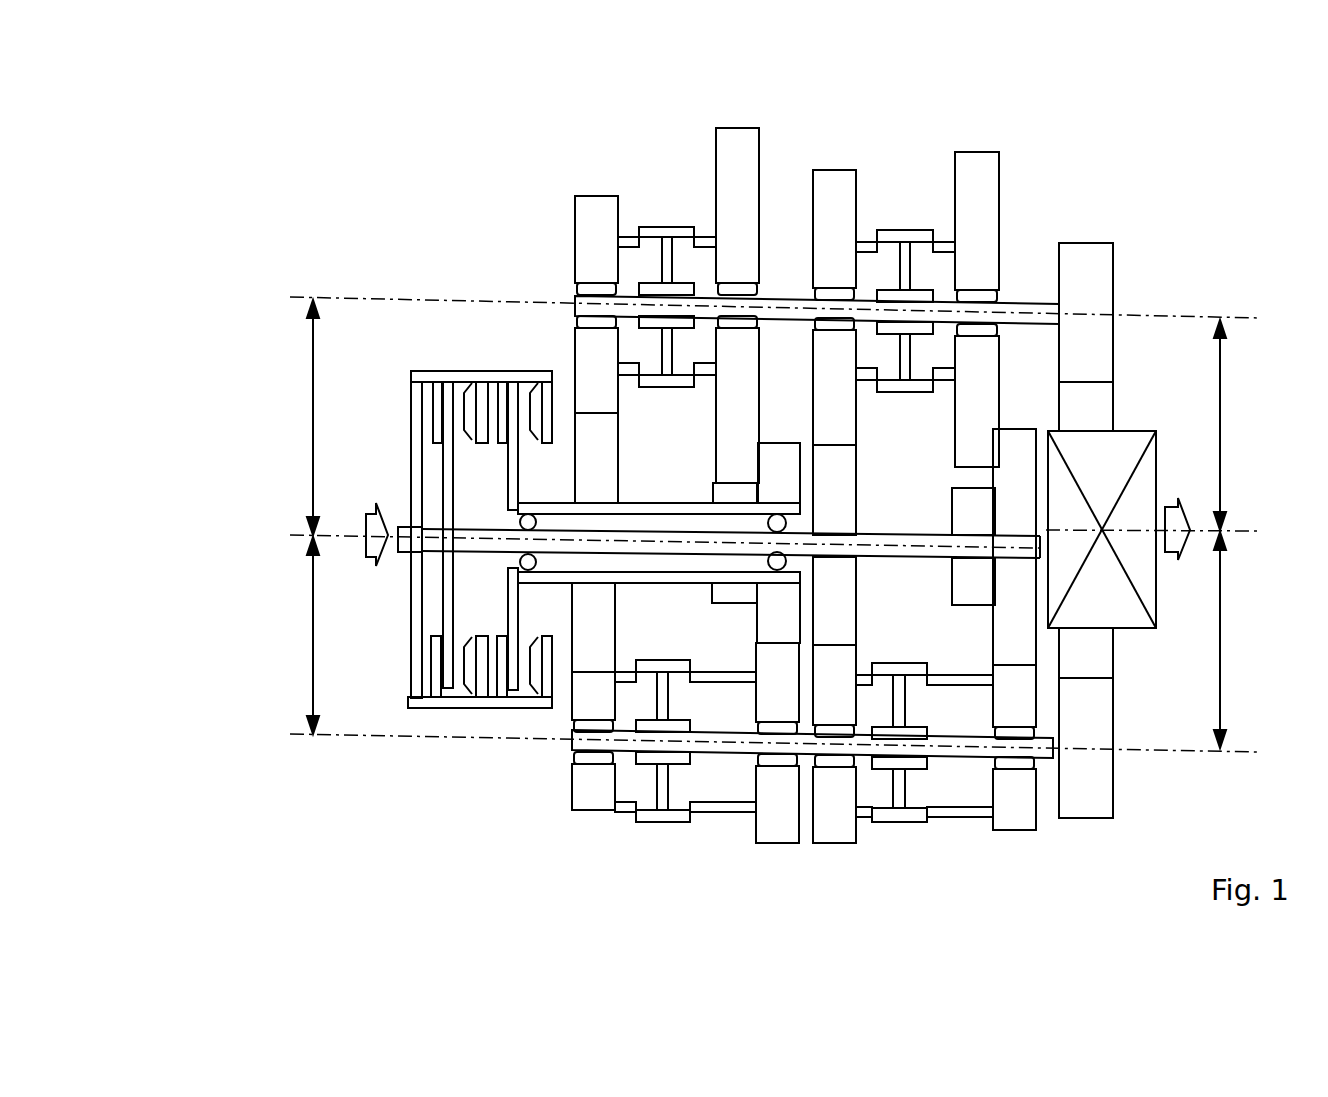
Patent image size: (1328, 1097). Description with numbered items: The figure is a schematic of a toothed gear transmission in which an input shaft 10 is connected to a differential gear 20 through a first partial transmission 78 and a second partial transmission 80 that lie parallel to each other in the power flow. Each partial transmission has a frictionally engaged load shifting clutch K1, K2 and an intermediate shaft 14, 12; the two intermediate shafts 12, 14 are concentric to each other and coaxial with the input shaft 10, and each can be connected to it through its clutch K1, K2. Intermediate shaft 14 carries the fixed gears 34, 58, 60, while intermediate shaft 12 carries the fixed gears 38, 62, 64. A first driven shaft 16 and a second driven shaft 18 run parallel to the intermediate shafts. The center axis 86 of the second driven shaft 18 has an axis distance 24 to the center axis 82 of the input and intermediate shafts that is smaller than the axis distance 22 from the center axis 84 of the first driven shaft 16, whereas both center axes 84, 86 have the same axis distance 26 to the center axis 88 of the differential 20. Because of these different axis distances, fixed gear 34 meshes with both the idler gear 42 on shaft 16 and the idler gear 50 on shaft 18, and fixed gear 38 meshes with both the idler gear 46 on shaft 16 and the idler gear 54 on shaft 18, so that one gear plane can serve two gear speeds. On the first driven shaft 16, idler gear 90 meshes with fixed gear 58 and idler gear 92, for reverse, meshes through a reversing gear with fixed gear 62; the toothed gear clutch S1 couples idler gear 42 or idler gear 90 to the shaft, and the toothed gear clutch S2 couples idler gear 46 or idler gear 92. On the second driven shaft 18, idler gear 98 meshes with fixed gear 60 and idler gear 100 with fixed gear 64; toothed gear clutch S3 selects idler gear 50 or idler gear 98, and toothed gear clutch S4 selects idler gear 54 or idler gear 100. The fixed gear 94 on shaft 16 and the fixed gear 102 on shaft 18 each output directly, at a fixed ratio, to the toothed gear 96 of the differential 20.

The input shaft 10 is at (405, 537).
The intermediate shaft 12 is at (487, 540).
The intermediate shaft 14 is at (560, 573).
The first driven shaft 16 is at (1038, 308).
The second driven shaft 18 is at (1022, 753).
The differential gear 20 is at (1141, 484).
The axis distance 22 is at (313, 445).
The axis distance 24 is at (312, 637).
The axis distance 26 is at (1251, 534).
The fixed gear 34 is at (595, 640).
The fixed gear 38 is at (843, 475).
The idler gear 42 is at (592, 228).
The idler gear 46 is at (828, 400).
The idler gear 50 is at (585, 777).
The idler gear 54 is at (853, 648).
The fixed gear 58 is at (725, 493).
The fixed gear 60 is at (773, 620).
The fixed gear 62 is at (972, 523).
The fixed gear 64 is at (1003, 640).
The first partial transmission 78 is at (1068, 130).
The second partial transmission 80 is at (440, 125).
The center axis 82 is at (308, 536).
The center axis 84 is at (483, 297).
The center axis 86 is at (390, 748).
The center axis 88 is at (1224, 548).
The idler gear 90 is at (747, 242).
The idler gear 92 is at (983, 248).
The fixed gear 94 is at (1103, 285).
The toothed gear 96 is at (1095, 400).
The idler gear 98 is at (767, 817).
The idler gear 100 is at (1032, 817).
The fixed gear 102 is at (1097, 777).
The load shifting clutch K1 is at (522, 397).
The load shifting clutch K2 is at (455, 392).
The toothed gear clutch S1 is at (667, 227).
The toothed gear clutch S2 is at (904, 230).
The toothed gear clutch S3 is at (653, 817).
The toothed gear clutch S4 is at (900, 810).